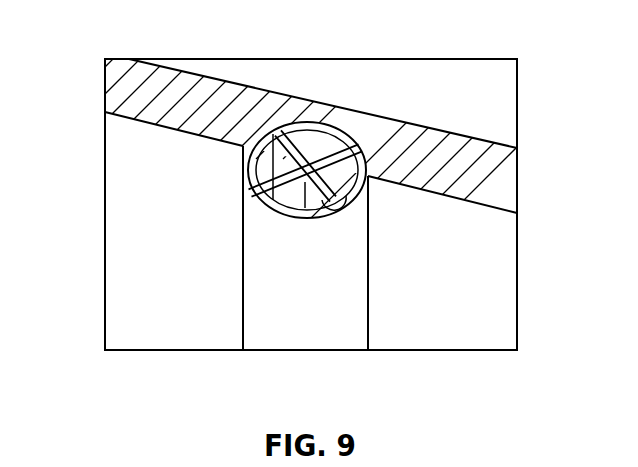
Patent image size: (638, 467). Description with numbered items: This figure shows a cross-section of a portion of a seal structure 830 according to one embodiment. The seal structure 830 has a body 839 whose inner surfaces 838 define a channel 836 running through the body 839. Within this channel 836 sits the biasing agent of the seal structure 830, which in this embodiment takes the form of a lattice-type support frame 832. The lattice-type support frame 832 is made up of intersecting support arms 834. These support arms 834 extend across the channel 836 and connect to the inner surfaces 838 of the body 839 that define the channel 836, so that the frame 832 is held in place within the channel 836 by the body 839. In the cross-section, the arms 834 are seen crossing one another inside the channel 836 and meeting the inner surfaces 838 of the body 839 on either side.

The seal structure 830 is at (232, 168).
The lattice-type support frame 832 is at (297, 142).
The support arms 834 is at (270, 196).
The channel 836 is at (322, 144).
The inner surfaces 838 is at (342, 190).
The body 839 is at (410, 147).